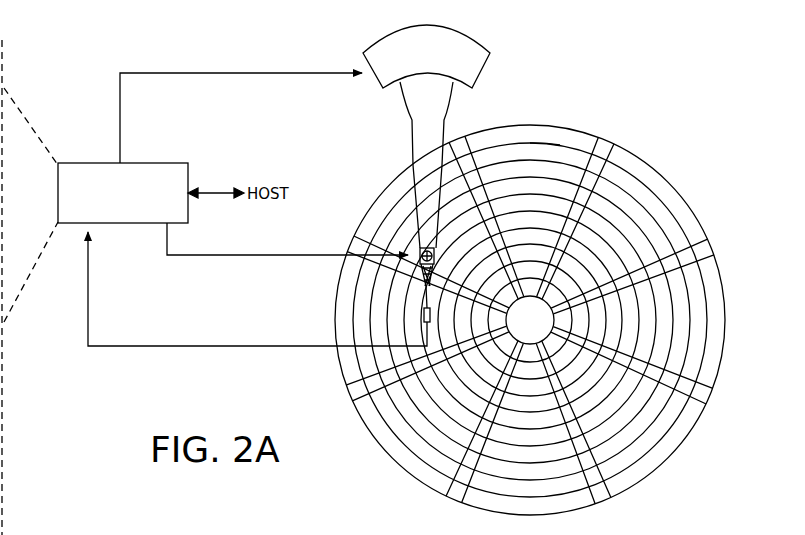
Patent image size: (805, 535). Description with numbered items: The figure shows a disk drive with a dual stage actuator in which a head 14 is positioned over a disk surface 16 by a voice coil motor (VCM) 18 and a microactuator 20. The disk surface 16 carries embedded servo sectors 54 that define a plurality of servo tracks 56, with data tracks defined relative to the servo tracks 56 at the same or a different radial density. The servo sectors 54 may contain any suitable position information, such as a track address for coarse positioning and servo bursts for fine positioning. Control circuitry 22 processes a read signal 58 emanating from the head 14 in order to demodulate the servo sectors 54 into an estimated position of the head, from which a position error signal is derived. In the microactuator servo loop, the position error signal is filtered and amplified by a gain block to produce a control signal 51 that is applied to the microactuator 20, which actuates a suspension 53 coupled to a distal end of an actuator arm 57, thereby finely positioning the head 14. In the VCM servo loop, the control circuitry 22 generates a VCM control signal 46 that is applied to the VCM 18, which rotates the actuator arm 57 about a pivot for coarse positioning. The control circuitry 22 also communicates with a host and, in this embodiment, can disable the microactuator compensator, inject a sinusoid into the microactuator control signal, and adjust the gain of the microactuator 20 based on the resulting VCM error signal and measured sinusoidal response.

The head 14 is at (420, 312).
The disk surface 16 is at (664, 168).
The voice coil motor (VCM) 18 is at (381, 87).
The microactuator 20 is at (440, 251).
The control circuitry 22 is at (158, 163).
The VCM control signal 46 is at (120, 121).
The control signal 51 is at (266, 254).
The suspension 53 is at (435, 297).
The servo sectors 54 is at (462, 140).
The servo tracks 56 is at (528, 150).
The actuator arm 57 is at (411, 150).
The read signal 58 is at (218, 345).